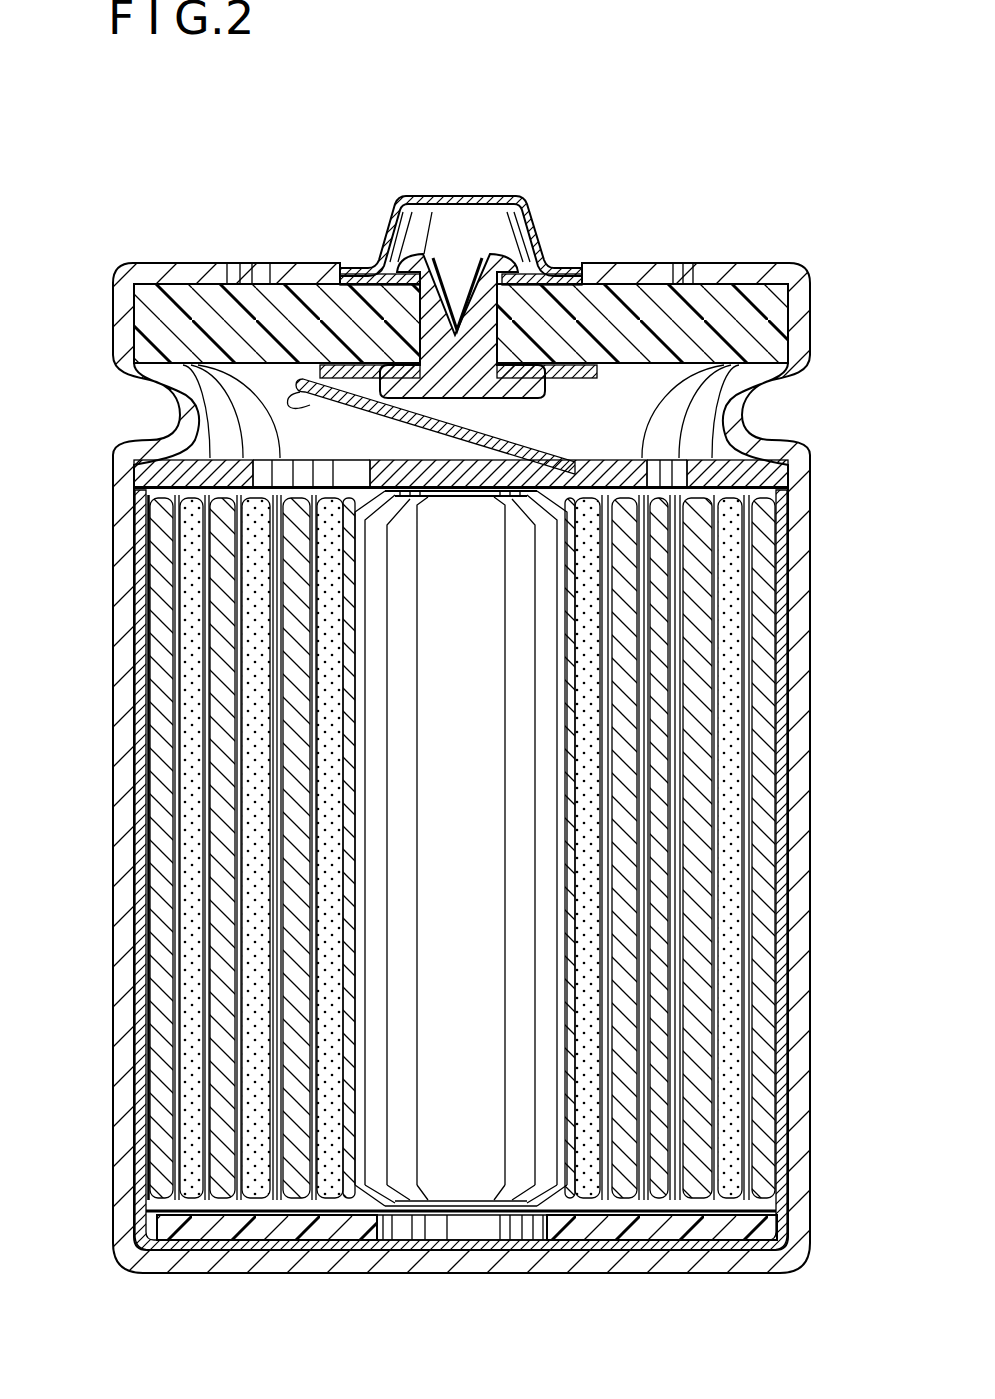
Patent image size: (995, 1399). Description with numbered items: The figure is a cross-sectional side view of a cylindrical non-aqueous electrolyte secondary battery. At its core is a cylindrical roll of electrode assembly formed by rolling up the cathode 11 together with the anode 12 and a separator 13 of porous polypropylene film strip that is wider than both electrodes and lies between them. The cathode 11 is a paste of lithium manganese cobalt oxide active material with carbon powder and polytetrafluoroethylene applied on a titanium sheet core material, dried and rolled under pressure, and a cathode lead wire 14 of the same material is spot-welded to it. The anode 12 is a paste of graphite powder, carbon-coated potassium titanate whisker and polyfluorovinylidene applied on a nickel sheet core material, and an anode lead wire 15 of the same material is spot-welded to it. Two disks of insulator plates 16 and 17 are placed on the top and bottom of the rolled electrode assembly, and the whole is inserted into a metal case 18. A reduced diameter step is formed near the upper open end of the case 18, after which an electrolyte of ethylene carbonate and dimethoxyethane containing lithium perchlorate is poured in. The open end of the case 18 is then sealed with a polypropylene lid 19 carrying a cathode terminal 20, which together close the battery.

The cathode 11 is at (737, 972).
The anode 12 is at (776, 862).
The separator 13 is at (790, 752).
The cathode lead wire 14 is at (740, 405).
The anode lead wire 15 is at (501, 1276).
The insulator plate 16 is at (785, 474).
The insulator plate 17 is at (765, 1235).
The metal case 18 is at (118, 657).
The polypropylene lid 19 is at (158, 313).
The cathode terminal 20 is at (470, 196).